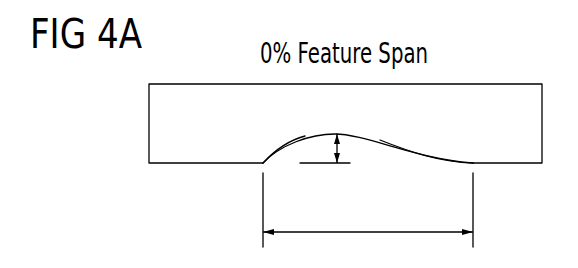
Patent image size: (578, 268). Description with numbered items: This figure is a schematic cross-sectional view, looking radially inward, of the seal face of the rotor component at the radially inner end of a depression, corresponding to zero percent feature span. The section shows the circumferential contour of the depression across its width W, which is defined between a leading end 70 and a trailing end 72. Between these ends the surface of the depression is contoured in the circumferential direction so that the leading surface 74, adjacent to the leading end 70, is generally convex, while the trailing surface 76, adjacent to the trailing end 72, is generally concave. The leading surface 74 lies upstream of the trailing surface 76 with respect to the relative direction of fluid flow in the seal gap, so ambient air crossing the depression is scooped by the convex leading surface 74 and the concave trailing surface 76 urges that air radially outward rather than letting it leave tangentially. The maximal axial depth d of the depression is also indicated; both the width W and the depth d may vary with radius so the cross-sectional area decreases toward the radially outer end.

The leading end 70 is at (474, 163).
The trailing end 72 is at (261, 163).
The leading surface 74 is at (418, 157).
The trailing surface 76 is at (284, 148).
The maximal axial depth d is at (337, 150).
The width W is at (368, 220).